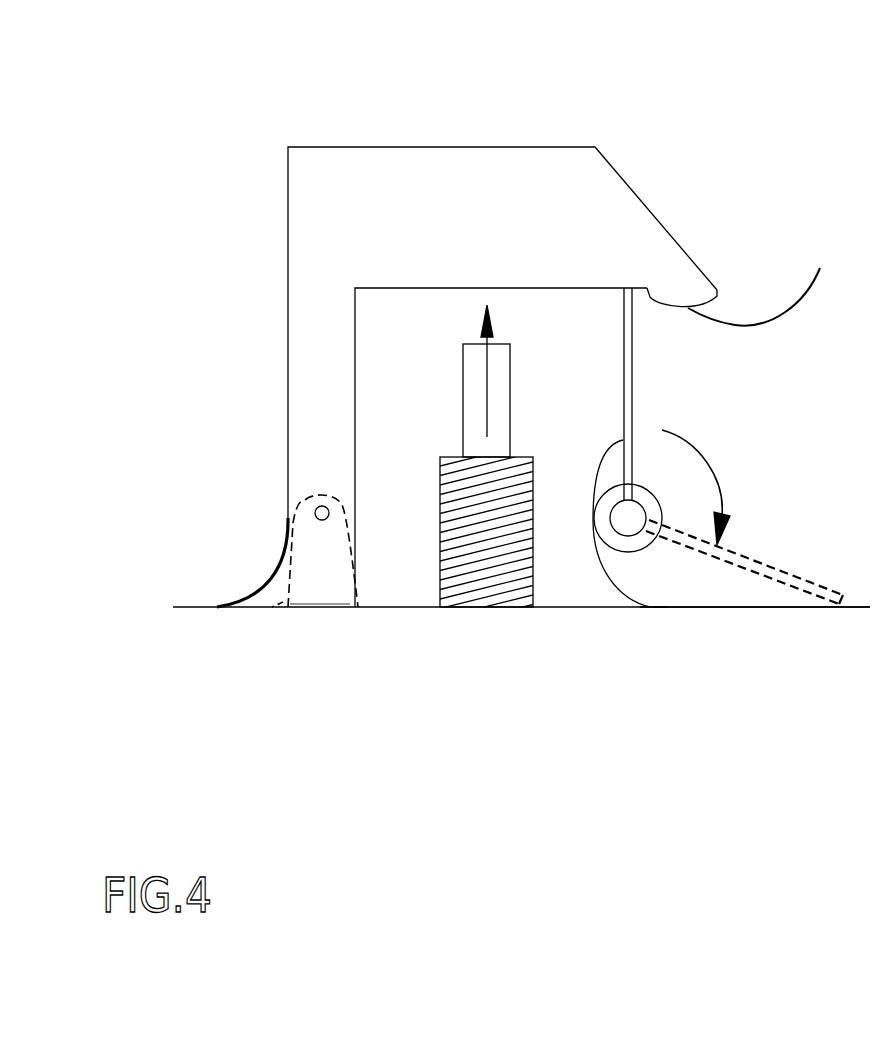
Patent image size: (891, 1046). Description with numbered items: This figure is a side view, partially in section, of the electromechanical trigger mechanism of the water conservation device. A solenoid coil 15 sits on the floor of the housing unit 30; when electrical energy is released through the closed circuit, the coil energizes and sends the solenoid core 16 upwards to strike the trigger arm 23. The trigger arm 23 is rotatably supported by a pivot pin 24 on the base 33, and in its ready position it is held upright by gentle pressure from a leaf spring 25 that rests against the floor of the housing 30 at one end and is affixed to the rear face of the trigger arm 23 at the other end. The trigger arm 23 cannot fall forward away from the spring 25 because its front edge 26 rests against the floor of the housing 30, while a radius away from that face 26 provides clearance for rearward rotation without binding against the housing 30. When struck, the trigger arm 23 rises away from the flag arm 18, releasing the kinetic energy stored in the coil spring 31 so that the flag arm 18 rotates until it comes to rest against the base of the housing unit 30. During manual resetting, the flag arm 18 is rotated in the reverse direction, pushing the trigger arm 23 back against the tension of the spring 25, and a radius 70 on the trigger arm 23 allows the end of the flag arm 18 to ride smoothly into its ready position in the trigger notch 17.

The solenoid coil 15 is at (505, 588).
The solenoid core 16 is at (468, 407).
The trigger notch 17 is at (647, 288).
The flag arm 18 is at (628, 357).
The trigger arm 23 is at (401, 182).
The pivot pin 24 is at (327, 508).
The leaf spring 25 is at (283, 560).
The front edge 26 is at (357, 608).
The housing unit 30 is at (702, 607).
The coil spring 31 is at (603, 457).
The base 33 is at (282, 603).
The radius 70 is at (769, 273).